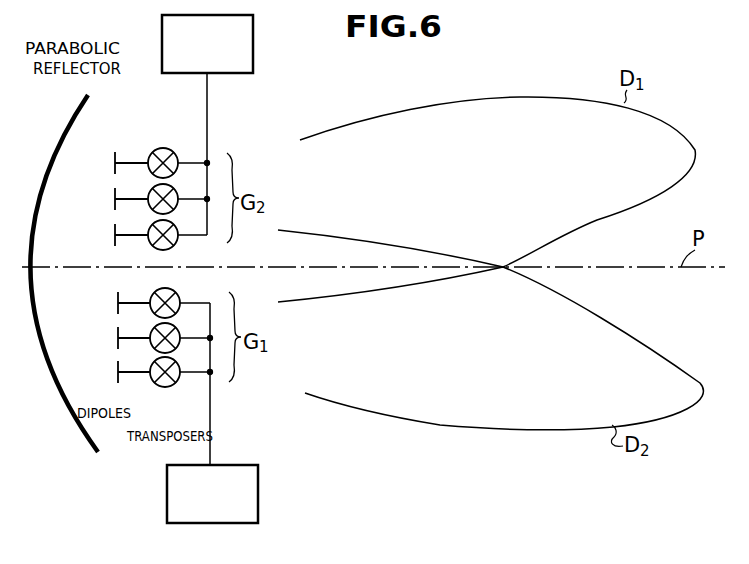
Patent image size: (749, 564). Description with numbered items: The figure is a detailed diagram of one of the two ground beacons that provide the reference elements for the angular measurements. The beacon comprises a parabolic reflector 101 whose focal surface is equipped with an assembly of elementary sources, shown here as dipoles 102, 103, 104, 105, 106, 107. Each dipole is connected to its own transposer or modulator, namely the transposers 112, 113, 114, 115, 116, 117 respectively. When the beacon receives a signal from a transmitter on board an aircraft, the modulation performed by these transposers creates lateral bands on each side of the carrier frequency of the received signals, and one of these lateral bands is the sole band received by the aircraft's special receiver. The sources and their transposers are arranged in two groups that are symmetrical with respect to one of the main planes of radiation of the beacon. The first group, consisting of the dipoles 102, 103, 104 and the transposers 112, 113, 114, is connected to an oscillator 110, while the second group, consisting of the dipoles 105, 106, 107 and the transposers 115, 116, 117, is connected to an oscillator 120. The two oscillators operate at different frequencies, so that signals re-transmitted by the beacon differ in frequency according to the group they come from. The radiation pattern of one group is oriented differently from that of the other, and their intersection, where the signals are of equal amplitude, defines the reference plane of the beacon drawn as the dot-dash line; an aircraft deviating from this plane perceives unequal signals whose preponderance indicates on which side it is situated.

The parabolic reflector 101 is at (58, 143).
The dipole 102 is at (116, 383).
The dipole 103 is at (116, 348).
The dipole 104 is at (116, 313).
The dipole 105 is at (114, 246).
The dipole 106 is at (108, 202).
The dipole 107 is at (114, 170).
The oscillator 110 is at (282, 492).
The transposer 112 is at (167, 386).
The transposer 113 is at (174, 347).
The transposer 114 is at (174, 312).
The transposer 115 is at (182, 220).
The transposer 116 is at (168, 186).
The transposer 117 is at (187, 158).
The oscillator 120 is at (253, 50).